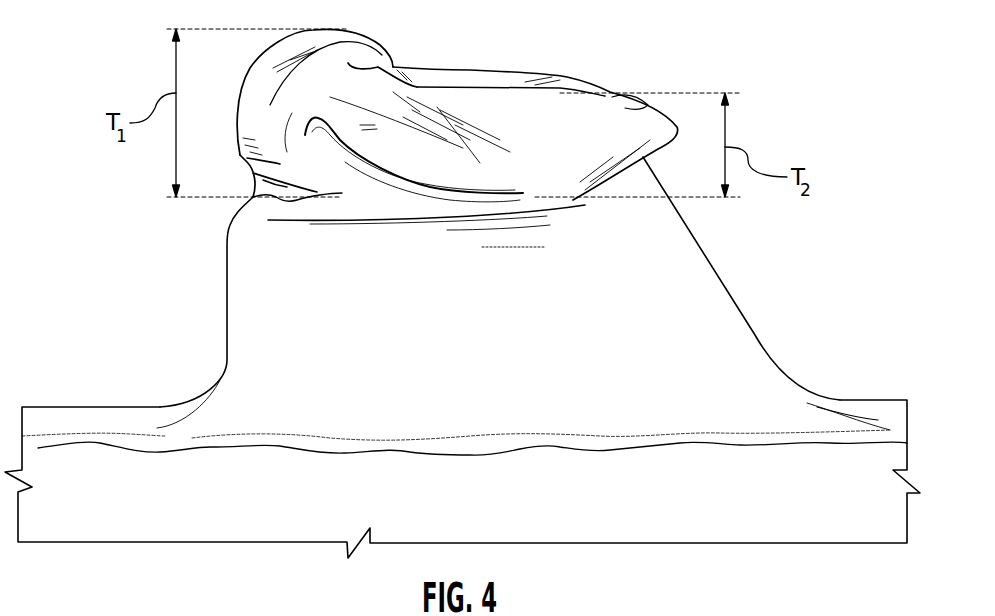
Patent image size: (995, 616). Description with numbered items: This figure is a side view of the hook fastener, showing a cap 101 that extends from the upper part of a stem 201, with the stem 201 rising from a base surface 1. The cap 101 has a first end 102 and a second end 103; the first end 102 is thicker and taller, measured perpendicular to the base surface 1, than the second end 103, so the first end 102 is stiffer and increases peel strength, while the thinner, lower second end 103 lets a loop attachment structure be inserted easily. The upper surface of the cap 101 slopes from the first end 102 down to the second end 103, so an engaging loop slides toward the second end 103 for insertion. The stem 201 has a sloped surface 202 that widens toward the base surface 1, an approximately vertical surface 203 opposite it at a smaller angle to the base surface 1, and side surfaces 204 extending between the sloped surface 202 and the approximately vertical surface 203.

The base surface 1 is at (103, 433).
The cap 101 is at (465, 105).
The first end 102 is at (308, 94).
The second end 103 is at (618, 127).
The stem 201 is at (530, 393).
The sloped surface 202 is at (755, 327).
The approximately vertical surface 203 is at (227, 312).
The side surfaces 204 is at (345, 362).